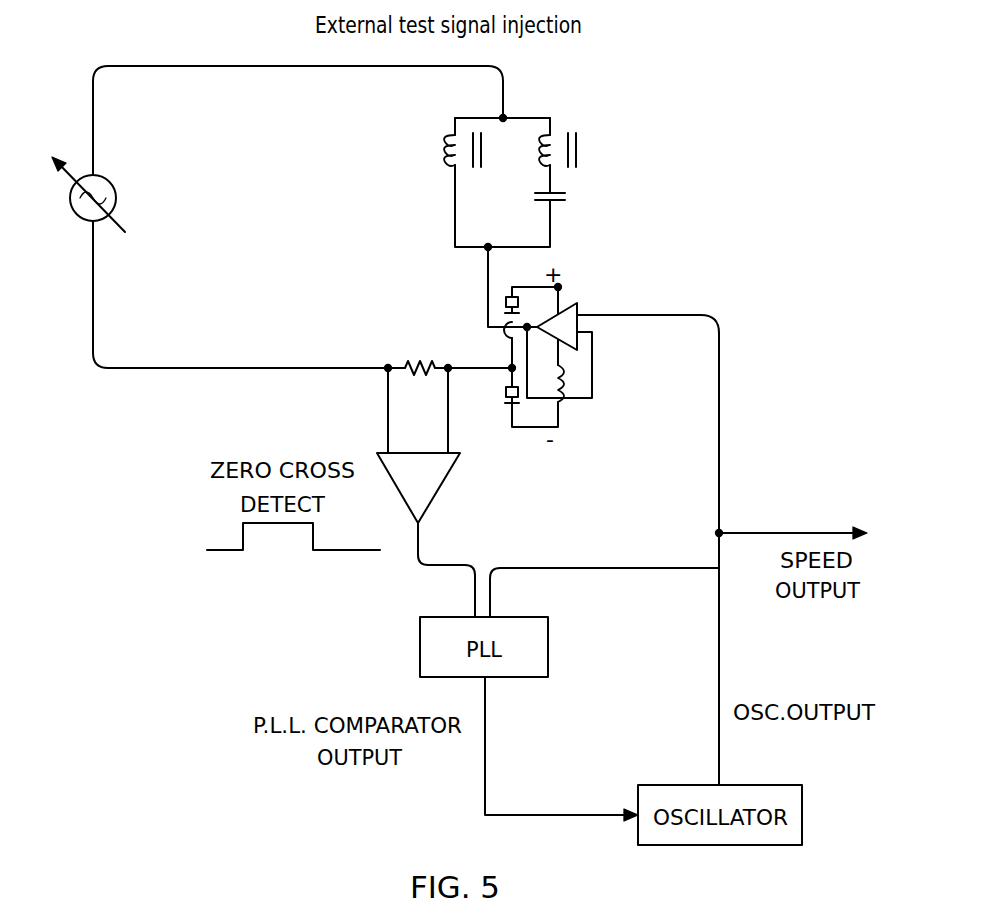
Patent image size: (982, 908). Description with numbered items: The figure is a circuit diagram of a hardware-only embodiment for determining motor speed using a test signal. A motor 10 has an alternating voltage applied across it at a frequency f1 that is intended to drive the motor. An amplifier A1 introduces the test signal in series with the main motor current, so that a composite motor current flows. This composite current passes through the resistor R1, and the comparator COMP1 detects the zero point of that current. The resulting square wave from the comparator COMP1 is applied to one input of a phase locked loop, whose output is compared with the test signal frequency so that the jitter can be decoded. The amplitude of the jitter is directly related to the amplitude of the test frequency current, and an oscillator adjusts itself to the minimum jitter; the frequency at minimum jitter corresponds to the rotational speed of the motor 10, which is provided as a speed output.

The motor 10 is at (571, 183).
The frequency f1 is at (135, 207).
The amplifier A1 is at (622, 529).
The resistor R1 is at (450, 346).
The comparator COMP1 is at (457, 492).